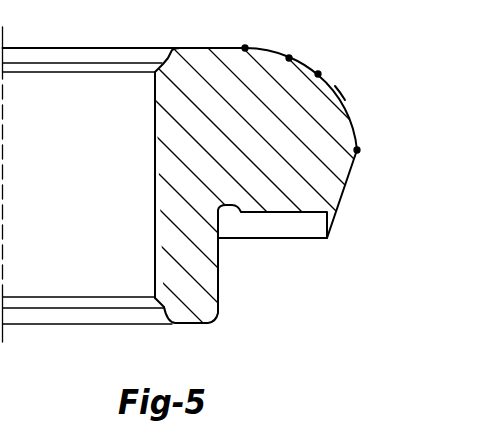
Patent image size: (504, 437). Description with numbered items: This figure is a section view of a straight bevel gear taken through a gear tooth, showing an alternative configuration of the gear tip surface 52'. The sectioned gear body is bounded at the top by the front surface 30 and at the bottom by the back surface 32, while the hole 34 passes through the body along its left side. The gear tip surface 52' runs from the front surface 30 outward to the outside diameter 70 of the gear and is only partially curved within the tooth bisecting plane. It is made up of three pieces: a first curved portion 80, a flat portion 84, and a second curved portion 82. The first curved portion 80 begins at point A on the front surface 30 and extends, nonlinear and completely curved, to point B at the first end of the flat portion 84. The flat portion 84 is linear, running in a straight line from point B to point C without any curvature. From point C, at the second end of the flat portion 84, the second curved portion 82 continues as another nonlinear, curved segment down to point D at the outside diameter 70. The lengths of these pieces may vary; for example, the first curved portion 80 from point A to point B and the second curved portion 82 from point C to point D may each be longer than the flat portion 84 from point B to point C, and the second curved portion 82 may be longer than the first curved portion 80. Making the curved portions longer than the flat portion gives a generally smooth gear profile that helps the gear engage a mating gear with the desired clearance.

The front surface 30 is at (191, 47).
The back surface 32 is at (192, 326).
The hole 34 is at (60, 306).
The outside diameter 70 is at (358, 153).
The first curved portion 80 is at (269, 47).
The second curved portion 82 is at (346, 97).
The flat portion 84 is at (310, 67).
The gear tip surface 52' is at (357, 58).
The point A is at (246, 38).
The point B is at (291, 47).
The point C is at (324, 64).
The point D is at (364, 151).